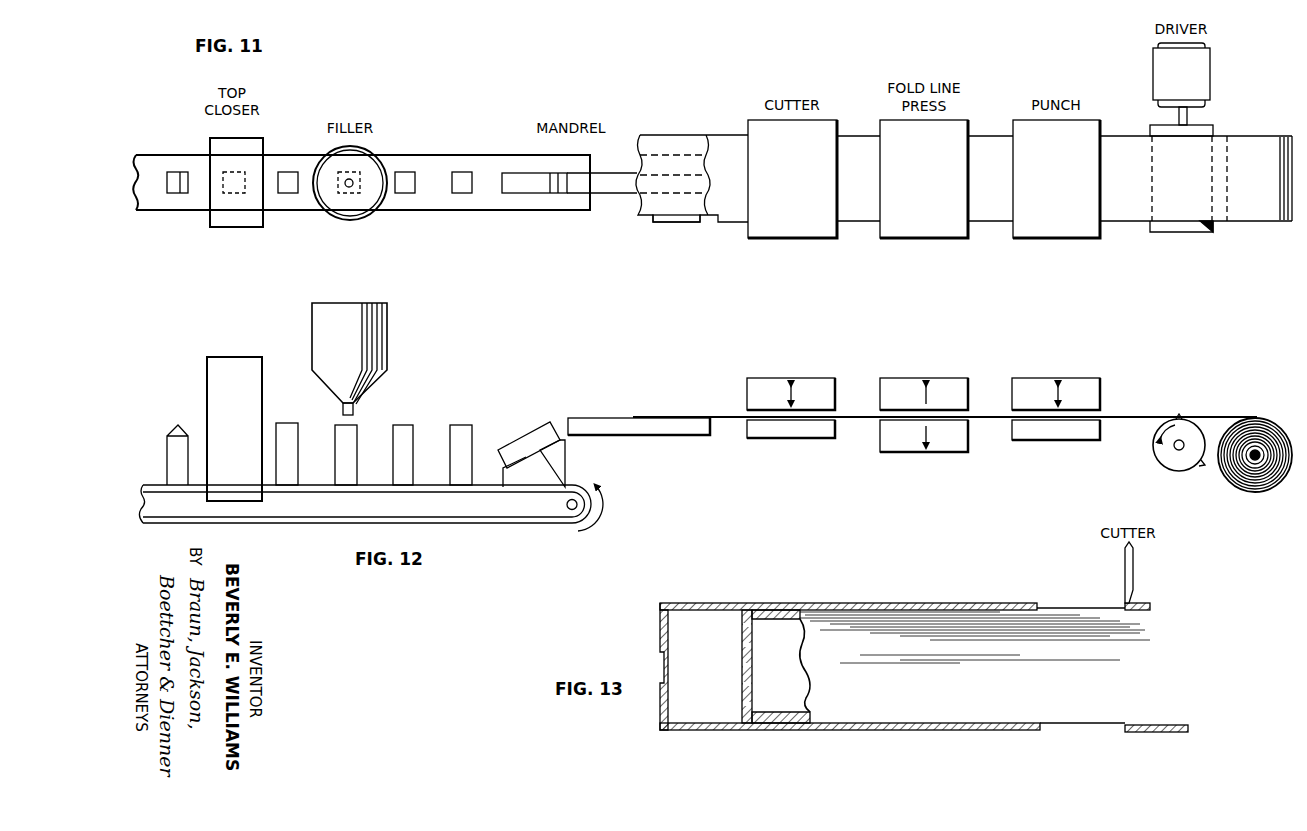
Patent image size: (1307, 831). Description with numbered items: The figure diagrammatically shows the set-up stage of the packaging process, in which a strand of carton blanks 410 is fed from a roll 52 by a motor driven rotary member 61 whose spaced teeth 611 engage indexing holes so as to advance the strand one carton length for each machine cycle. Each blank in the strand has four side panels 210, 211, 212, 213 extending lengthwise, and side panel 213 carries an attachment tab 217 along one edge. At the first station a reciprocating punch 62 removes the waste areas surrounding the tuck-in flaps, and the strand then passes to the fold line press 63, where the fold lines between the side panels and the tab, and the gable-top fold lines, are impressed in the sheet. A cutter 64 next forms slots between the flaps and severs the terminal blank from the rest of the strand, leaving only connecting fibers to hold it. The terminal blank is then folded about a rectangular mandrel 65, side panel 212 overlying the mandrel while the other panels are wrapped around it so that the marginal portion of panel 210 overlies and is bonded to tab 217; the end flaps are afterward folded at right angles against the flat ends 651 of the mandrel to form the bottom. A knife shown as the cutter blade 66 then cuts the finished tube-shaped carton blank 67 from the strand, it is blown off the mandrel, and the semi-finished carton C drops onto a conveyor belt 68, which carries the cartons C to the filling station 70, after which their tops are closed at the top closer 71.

In FIG. 11, the roll 52 is at (1262, 219).
In FIG. 12, the roll 52 is at (1258, 490).
In FIG. 11, the motor driven rotary member 61 is at (1193, 232).
In FIG. 12, the motor driven rotary member 61 is at (1175, 466).
In FIG. 12, the spaced teeth 611 is at (1153, 458).
In FIG. 11, the reciprocating punch 62 is at (1053, 233).
In FIG. 12, the reciprocating punch 62 is at (1025, 380).
In FIG. 11, the fold line station 63 is at (920, 233).
In FIG. 12, the fold line station 63 is at (900, 380).
In FIG. 11, the cutter 64 is at (782, 233).
In FIG. 12, the cutter 64 is at (762, 380).
In FIG. 12, the rectangular mandrel 65 is at (668, 432).
In FIG. 13, the rectangular mandrel 65 is at (1063, 612).
In FIG. 13, the flat end of the mandrel 651 is at (740, 618).
In FIG. 11, the mandrel / cutter blade 66 is at (597, 196).
In FIG. 13, the mandrel / cutter blade 66 is at (1134, 570).
In FIG. 13, the folded carton blank 67 is at (753, 628).
In FIG. 11, the conveyor belt 68 is at (494, 207).
In FIG. 12, the conveyor belt 68 is at (503, 522).
In FIG. 11, the filling station 70 is at (347, 219).
In FIG. 12, the filling station 70 is at (388, 336).
In FIG. 11, the top closing station 71 is at (220, 226).
In FIG. 12, the top closing station 71 is at (218, 356).
In FIG. 11, the side panel 210 is at (668, 140).
In FIG. 11, the side panel 211 is at (712, 170).
In FIG. 11, the side panel 212 is at (712, 190).
In FIG. 11, the side panel 213 is at (665, 220).
In FIG. 11, the attachment tab 217 is at (679, 228).
In FIG. 11, the strand of carton blanks 410 is at (1137, 218).
In FIG. 12, the strand of carton blanks 410 is at (1133, 418).
In FIG. 11, the carton C is at (452, 193).
In FIG. 12, the carton C is at (175, 428).